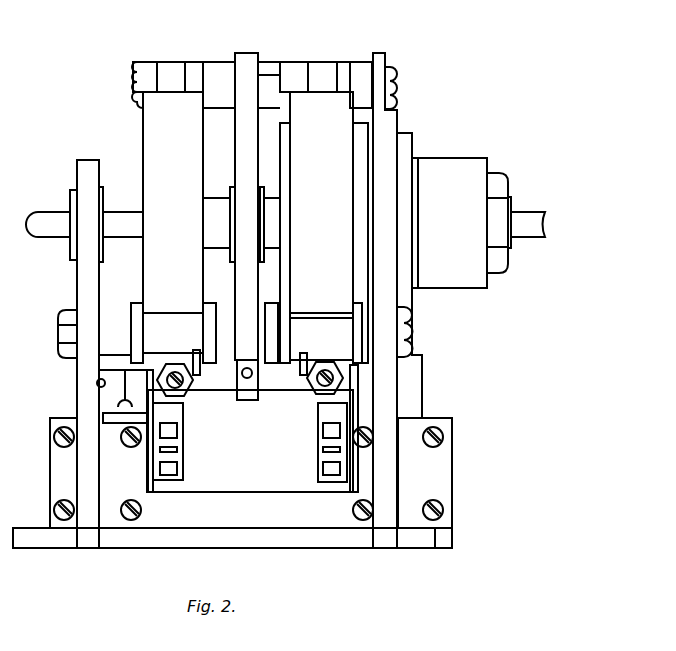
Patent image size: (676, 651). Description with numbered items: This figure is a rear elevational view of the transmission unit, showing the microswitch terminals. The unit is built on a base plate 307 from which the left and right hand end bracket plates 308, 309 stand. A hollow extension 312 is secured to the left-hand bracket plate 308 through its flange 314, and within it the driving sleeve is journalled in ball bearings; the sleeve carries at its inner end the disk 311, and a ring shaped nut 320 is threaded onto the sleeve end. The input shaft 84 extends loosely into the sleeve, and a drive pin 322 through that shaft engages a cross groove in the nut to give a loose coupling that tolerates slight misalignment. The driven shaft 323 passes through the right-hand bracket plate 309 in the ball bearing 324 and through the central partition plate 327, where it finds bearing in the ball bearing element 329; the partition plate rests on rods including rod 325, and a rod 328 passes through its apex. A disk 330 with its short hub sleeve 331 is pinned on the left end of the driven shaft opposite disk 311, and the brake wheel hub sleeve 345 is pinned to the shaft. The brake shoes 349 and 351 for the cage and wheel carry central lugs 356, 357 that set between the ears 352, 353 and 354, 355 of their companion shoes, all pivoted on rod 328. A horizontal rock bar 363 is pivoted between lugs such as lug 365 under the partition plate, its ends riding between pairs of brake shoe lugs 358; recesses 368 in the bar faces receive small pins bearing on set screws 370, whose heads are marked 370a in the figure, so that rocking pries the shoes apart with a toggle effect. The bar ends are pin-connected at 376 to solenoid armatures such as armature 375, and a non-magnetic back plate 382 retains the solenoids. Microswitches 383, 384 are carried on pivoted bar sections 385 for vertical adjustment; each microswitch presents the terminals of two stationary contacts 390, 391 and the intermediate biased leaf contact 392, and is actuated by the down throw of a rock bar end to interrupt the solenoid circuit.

The input shaft 84 is at (532, 220).
The base plate 307 is at (290, 546).
The left hand end bracket plate 308 is at (386, 452).
The right hand end bracket plate 309 is at (82, 458).
The disk 311 is at (360, 143).
The hollow extension 312 is at (449, 223).
The flange 314 is at (410, 140).
The ring shaped nut 320 is at (495, 262).
The drive pin 322 is at (510, 200).
The driven shaft 323 is at (48, 222).
The ball bearing 324 is at (72, 192).
The rod 325 is at (57, 338).
The central partition plate 327 is at (245, 70).
The rod 328 is at (397, 86).
The ball bearing element 329 is at (232, 190).
The disk 330 is at (283, 170).
The short hub sleeve 331 is at (265, 200).
The sleeve 345 is at (207, 250).
The brake shoe 349 is at (313, 227).
The brake shoe 351 is at (173, 212).
The ear 352 is at (342, 72).
The ear 353 is at (298, 72).
The ear 354 is at (195, 70).
The ear 355 is at (150, 72).
The central lug 356 is at (318, 73).
The central lug 357 is at (170, 72).
The brake shoe lugs 358 is at (195, 365).
The rock bar 363 is at (217, 385).
The lug 365 is at (245, 393).
The recess 368 is at (247, 365).
The set screw 370 is at (188, 402).
The screw head 370a is at (178, 345).
The armature 375 is at (107, 398).
The pin connection 376 is at (96, 383).
The back plate 382 is at (247, 457).
The microswitch 383 is at (331, 485).
The microswitch 384 is at (174, 463).
The bar section 385 is at (150, 442).
The stationary contact terminal 390 is at (180, 432).
The stationary contact terminal 391 is at (180, 467).
The biased leaf contact terminal 392 is at (180, 450).